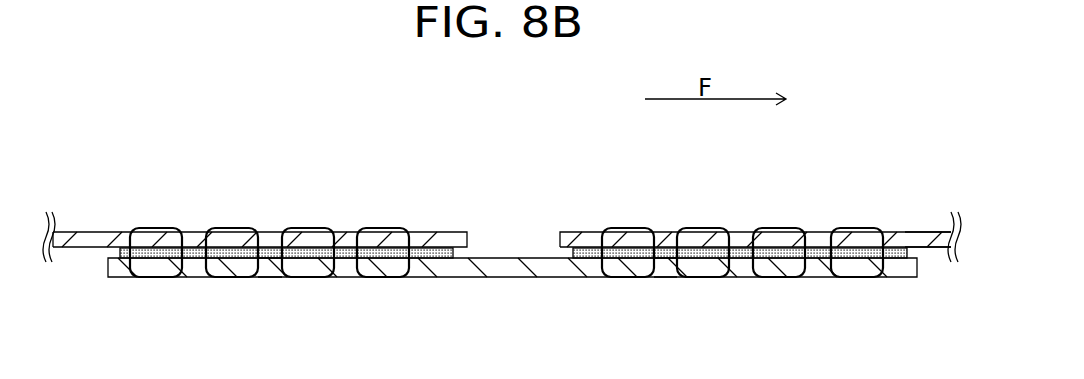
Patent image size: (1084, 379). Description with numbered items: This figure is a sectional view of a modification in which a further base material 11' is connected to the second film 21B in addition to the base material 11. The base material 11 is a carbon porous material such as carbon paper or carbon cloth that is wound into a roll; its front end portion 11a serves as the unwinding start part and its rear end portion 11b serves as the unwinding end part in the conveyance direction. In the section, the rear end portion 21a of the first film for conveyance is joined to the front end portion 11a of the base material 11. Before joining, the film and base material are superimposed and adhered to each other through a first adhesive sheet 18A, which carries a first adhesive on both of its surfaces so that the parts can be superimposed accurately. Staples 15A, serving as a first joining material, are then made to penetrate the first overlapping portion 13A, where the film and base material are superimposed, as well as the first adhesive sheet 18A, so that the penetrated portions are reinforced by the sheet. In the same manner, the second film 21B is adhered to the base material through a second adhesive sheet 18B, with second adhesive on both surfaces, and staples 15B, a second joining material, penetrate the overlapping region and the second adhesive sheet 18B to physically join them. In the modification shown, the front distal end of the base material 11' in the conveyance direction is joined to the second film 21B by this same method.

The base material 11 is at (928, 277).
The base material 11' is at (83, 275).
The front end portion 11a is at (435, 230).
The rear end portion 11b is at (572, 230).
The first overlapping portion 13A is at (415, 268).
The staples 15A is at (215, 228).
The staples 15B is at (688, 228).
The first adhesive sheet 18A is at (263, 257).
The second adhesive sheet 18B is at (660, 252).
The rear end portion 21a is at (163, 268).
The second film 21B is at (515, 268).